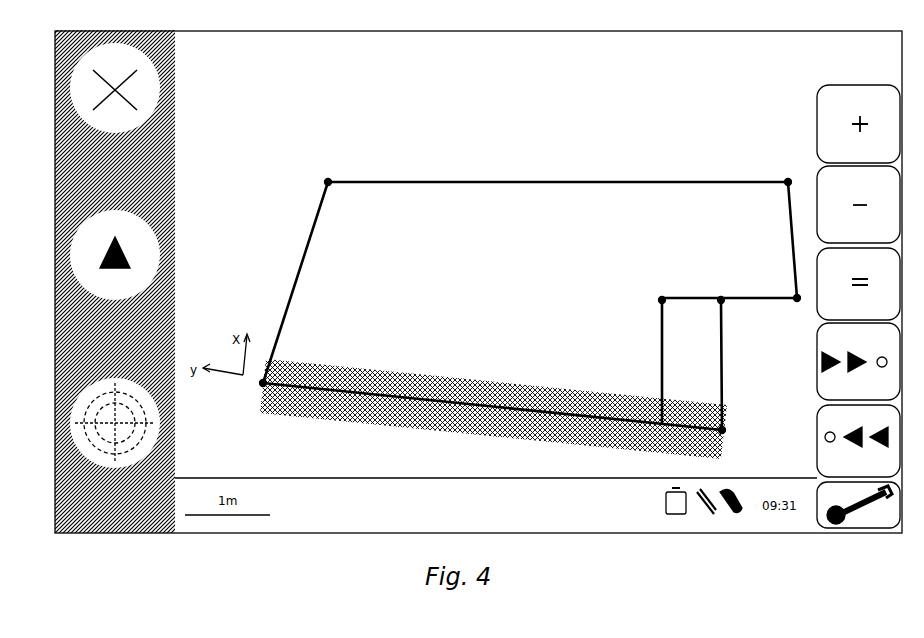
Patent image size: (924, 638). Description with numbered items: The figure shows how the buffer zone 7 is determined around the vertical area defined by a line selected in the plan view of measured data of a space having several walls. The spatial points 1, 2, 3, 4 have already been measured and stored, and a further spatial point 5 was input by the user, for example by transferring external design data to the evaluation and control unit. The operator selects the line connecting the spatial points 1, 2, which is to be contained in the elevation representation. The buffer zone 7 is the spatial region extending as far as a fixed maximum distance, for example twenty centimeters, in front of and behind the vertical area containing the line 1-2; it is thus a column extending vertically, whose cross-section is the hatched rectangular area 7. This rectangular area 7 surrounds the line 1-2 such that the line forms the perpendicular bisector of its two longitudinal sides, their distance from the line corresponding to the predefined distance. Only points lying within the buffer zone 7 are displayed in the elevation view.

The spatial point 1 is at (259, 387).
The spatial point 2 is at (725, 434).
The spatial point 3 is at (786, 178).
The spatial point 4 is at (325, 178).
The spatial point 5 is at (661, 88).
The buffer zone 7 is at (362, 420).